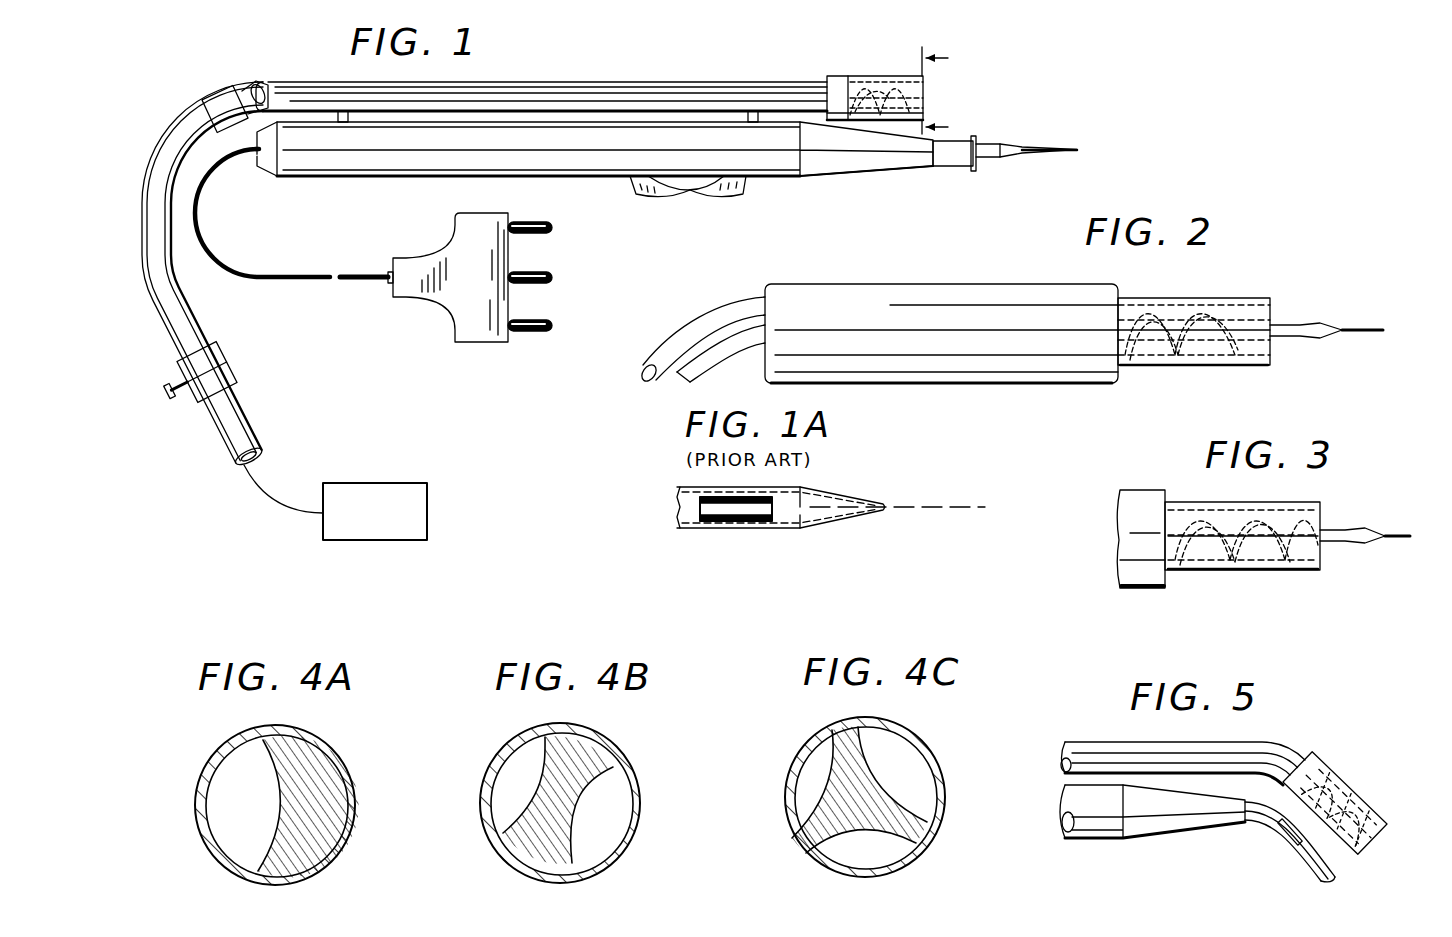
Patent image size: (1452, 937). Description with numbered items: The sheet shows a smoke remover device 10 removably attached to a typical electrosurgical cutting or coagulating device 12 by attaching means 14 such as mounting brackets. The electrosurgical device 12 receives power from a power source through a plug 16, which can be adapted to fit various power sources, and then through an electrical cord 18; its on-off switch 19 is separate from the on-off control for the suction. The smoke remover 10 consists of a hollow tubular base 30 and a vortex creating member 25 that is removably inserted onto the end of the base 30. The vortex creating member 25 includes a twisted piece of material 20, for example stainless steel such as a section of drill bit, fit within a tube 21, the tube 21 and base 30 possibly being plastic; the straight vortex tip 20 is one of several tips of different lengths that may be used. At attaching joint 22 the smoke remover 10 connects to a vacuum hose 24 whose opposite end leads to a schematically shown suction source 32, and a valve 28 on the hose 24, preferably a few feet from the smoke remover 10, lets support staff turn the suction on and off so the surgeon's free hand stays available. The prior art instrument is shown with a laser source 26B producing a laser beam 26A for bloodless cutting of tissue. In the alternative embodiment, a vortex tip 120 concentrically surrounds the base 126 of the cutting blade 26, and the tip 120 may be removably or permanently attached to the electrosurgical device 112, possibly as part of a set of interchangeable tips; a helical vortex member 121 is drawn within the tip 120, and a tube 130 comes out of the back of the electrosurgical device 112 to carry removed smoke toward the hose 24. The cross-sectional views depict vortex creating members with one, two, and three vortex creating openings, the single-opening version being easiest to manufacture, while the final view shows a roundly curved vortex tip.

In FIG. 1, the smoke remover device 10 is at (718, 72).
In FIG. 1, the electrosurgical cutting or coagulating device 12 is at (406, 180).
In FIG. 1, the attaching means 14 is at (348, 117).
In FIG. 1, the plug 16 is at (506, 346).
In FIG. 1, the electrical cord 18 is at (250, 276).
In FIG. 1, the on-off switch 19 is at (735, 190).
In FIG. 1, the twisted piece of material 20 is at (926, 92).
In FIG. 1, the tube 21 is at (835, 76).
In FIG. 1, the attaching joint 22 is at (213, 97).
In FIG. 1, the vacuum hose 24 is at (200, 278).
In FIG. 1, the vortex creating member 25 is at (880, 76).
In FIG. 1, the cutting blade 26 is at (1040, 148).
In FIG. 2, the cutting blade 26 is at (1340, 338).
In FIG. 1, the valve 28 is at (244, 377).
In FIG. 1, the hollow tubular base 30 is at (585, 86).
In FIG. 1, the suction source 32 is at (430, 499).
In FIG. 2, the electrosurgical device 112 is at (1008, 284).
In FIG. 2, the vortex tip 120 is at (1245, 300).
In FIG. 3, the vortex tip 120 is at (1263, 539).
In FIG. 2, the helical coil 121 is at (1165, 300).
In FIG. 2, the base of the cutting blade 126 is at (1205, 345).
In FIG. 2, the tube 130 is at (665, 341).
In FIG. 1A, the laser beam 26A is at (928, 512).
In FIG. 1A, the laser source 26B is at (740, 521).